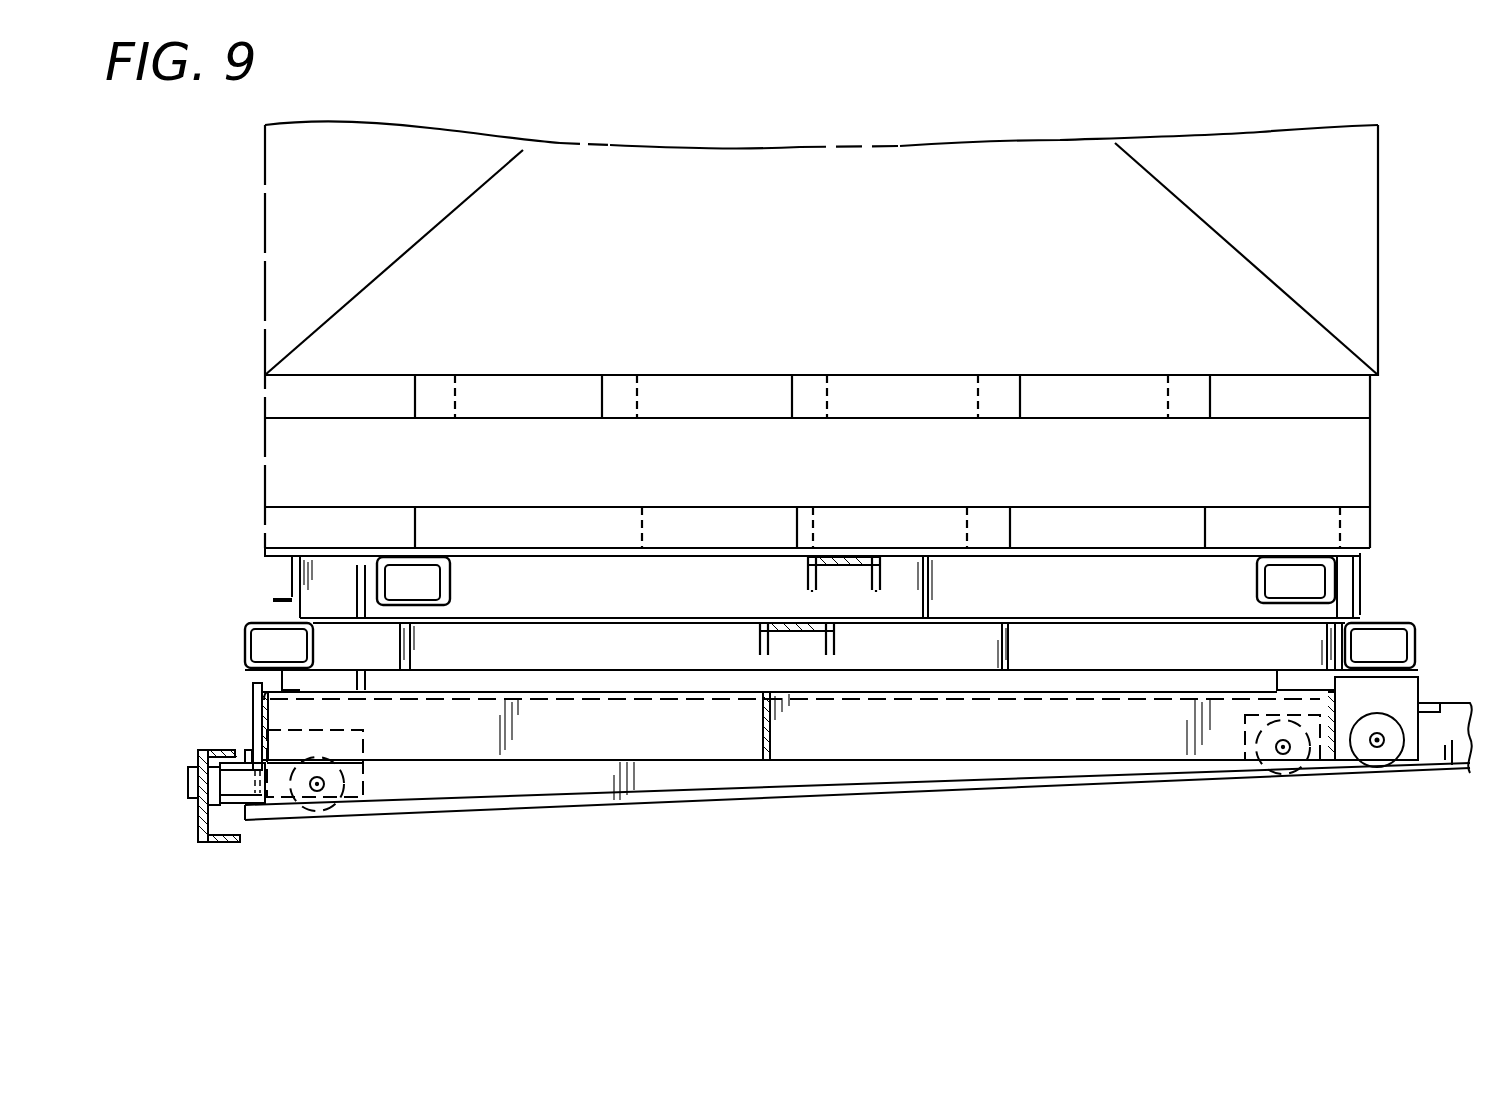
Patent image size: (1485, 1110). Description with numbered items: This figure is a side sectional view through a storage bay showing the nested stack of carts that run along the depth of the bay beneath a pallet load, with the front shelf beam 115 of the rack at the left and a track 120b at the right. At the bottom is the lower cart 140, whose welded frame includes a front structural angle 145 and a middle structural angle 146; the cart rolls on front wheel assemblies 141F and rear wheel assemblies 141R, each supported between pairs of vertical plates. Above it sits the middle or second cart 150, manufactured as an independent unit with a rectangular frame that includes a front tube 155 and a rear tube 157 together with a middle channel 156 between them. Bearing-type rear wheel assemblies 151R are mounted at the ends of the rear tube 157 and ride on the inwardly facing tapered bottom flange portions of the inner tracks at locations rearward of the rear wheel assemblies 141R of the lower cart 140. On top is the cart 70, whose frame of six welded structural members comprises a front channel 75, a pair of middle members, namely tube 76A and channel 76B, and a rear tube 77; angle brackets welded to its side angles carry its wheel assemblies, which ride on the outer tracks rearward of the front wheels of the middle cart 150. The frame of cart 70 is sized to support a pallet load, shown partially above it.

The second cart 70 is at (831, 656).
The front channel 75 is at (292, 572).
The tube 76A is at (452, 584).
The channel 76B is at (808, 567).
The rear tube 77 is at (1257, 575).
The front shelf beam 115 is at (212, 845).
The track rail 120b is at (1435, 700).
The lower cart 140 is at (1058, 740).
The front wheel assemblies 141F is at (328, 808).
The rear wheel assemblies 141R is at (1287, 768).
The front structural angle 145 is at (253, 712).
The middle structural angle 146 is at (775, 722).
The middle or second cart 150 is at (798, 746).
The rear wheel assemblies 151R is at (1380, 766).
The front tube 155 is at (245, 643).
The clip 156 is at (836, 648).
The rear tube 157 is at (1345, 640).